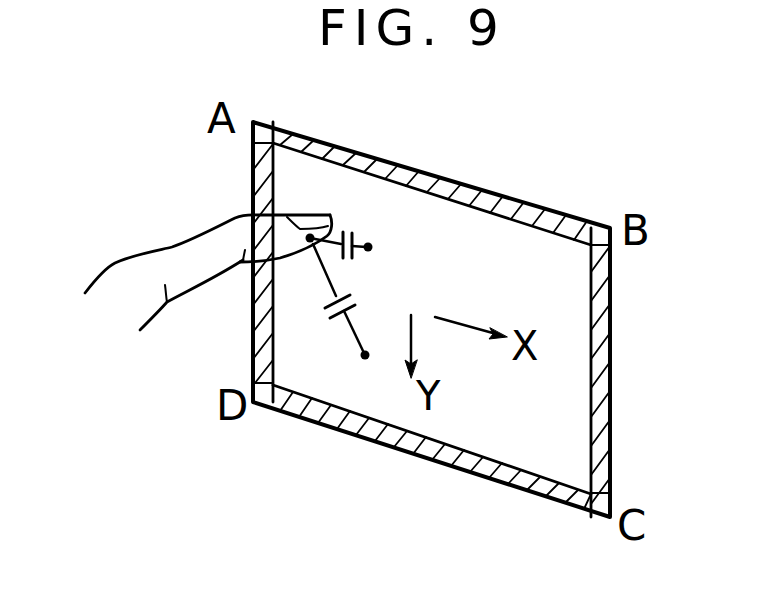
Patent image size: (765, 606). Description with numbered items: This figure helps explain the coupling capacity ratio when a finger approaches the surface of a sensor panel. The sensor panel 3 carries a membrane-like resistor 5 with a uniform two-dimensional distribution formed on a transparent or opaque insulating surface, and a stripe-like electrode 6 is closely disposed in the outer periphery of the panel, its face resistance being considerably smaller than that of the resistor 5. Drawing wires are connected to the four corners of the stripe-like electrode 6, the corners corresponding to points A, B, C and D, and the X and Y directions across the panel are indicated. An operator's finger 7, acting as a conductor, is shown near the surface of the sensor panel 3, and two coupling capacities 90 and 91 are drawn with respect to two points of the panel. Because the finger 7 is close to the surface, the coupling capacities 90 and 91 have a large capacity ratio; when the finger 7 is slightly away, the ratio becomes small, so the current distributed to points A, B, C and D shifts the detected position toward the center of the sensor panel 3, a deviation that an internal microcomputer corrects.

The sensor panel 3 is at (464, 310).
The resistor 5 is at (493, 415).
The stripe-like electrode 6 is at (563, 213).
The finger 7 is at (176, 254).
The coupling capacity 90 is at (353, 225).
The coupling capacity 91 is at (327, 312).